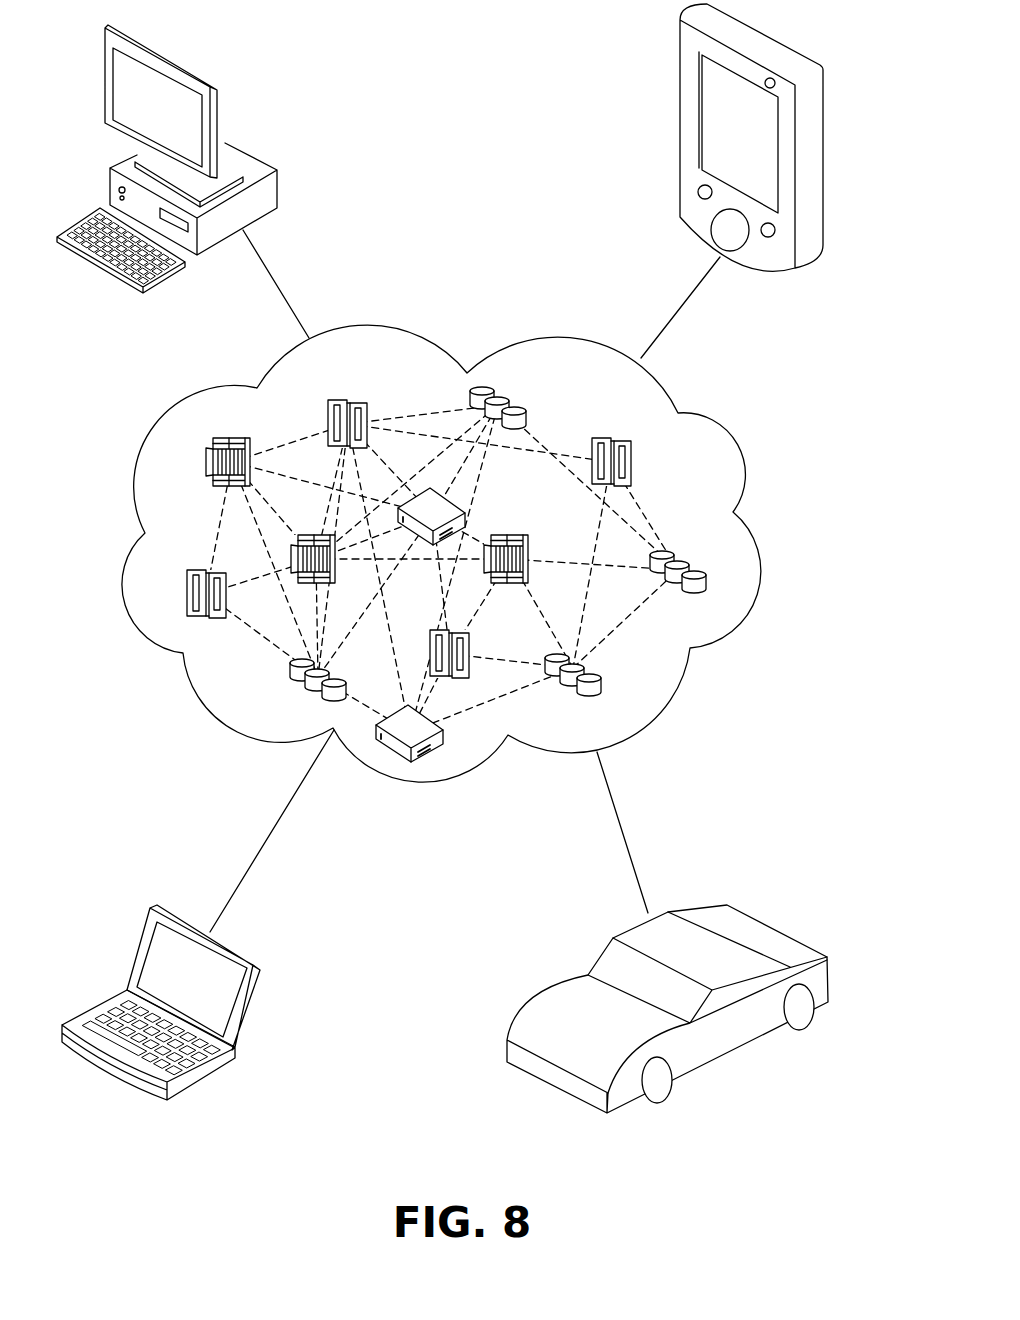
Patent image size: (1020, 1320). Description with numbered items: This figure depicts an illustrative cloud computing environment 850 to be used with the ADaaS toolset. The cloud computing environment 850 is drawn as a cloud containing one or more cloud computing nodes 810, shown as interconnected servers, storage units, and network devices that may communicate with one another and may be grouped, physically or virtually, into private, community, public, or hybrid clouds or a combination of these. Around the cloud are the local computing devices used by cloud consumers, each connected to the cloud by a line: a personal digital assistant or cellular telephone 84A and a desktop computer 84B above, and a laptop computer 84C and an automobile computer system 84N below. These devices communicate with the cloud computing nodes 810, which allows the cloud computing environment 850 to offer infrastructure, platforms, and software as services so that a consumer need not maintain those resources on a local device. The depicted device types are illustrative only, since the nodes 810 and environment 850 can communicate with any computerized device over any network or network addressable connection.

The personal digital assistant or cellular telephone 84A is at (680, 83).
The desktop computer 84B is at (278, 188).
The laptop computer 84C is at (263, 977).
The automobile computer system 84N is at (830, 973).
The cloud computing nodes 810 is at (677, 488).
The cloud computing environment 850 is at (733, 632).